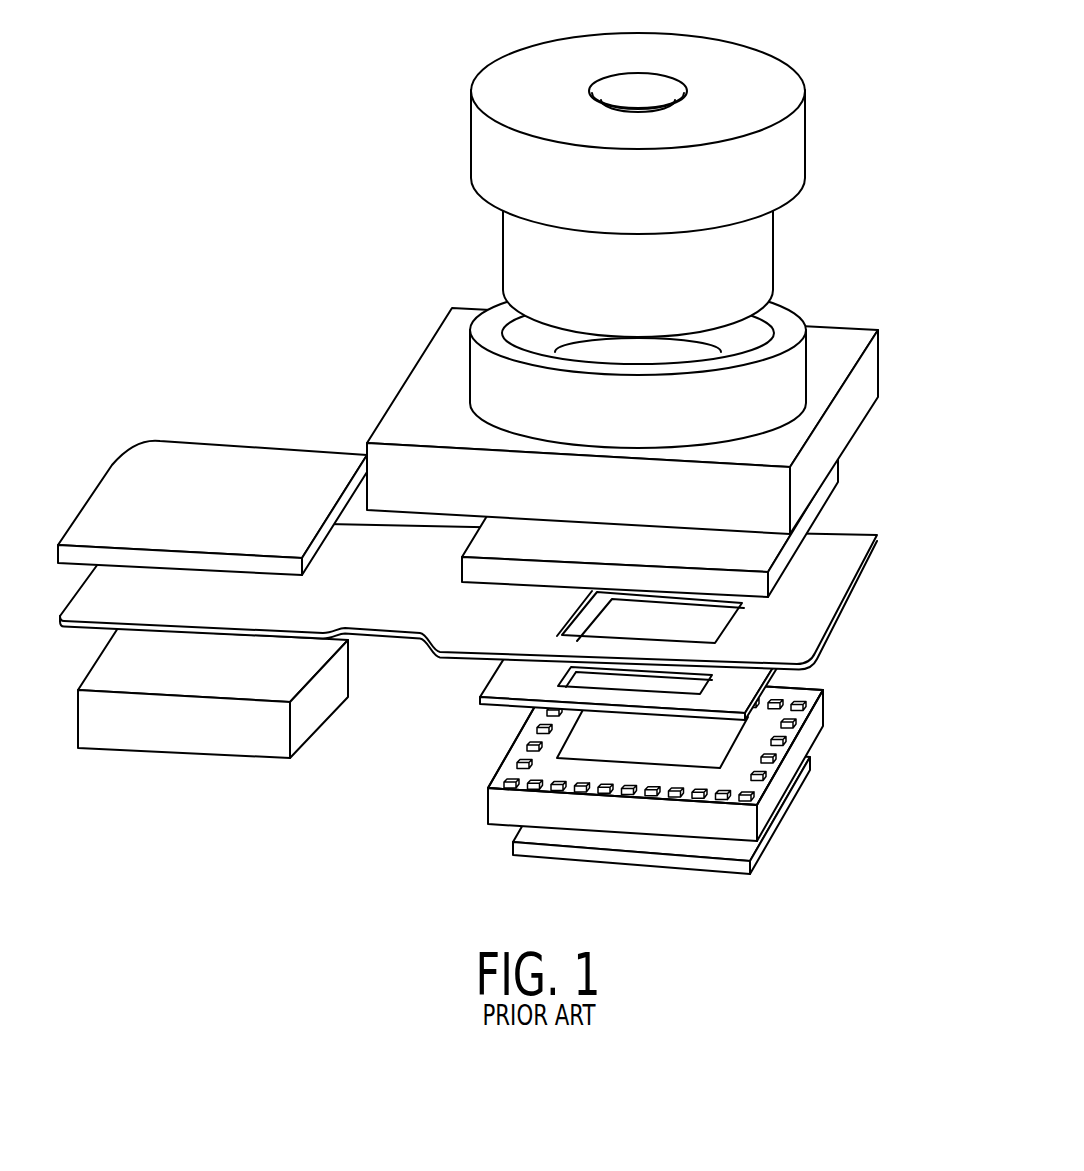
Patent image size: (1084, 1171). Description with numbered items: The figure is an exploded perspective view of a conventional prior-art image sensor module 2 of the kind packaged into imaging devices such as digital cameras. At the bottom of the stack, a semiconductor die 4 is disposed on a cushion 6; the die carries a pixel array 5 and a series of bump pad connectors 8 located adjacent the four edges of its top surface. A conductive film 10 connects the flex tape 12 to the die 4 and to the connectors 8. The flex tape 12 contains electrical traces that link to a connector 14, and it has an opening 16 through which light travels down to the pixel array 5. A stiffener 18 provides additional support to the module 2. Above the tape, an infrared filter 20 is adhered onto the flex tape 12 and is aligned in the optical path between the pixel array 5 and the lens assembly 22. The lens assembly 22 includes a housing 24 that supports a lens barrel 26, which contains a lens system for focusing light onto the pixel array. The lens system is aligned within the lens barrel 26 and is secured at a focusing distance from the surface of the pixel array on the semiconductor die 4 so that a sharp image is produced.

The image sensor module 2 is at (407, 52).
The semiconductor die 4 is at (813, 730).
The pixel array 5 is at (703, 741).
The cushion 6 is at (772, 830).
The bump pad connectors 8 is at (803, 690).
The conductive film 10 is at (487, 702).
The flex tape 12 is at (485, 607).
The connector 14 is at (235, 742).
The opening 16 is at (570, 617).
The stiffener 18 is at (220, 442).
The infrared filter 20 is at (838, 468).
The lens assembly 22 is at (396, 241).
The housing 24 is at (882, 330).
The lens barrel 26 is at (773, 222).